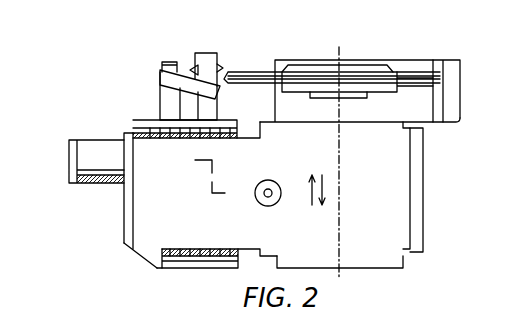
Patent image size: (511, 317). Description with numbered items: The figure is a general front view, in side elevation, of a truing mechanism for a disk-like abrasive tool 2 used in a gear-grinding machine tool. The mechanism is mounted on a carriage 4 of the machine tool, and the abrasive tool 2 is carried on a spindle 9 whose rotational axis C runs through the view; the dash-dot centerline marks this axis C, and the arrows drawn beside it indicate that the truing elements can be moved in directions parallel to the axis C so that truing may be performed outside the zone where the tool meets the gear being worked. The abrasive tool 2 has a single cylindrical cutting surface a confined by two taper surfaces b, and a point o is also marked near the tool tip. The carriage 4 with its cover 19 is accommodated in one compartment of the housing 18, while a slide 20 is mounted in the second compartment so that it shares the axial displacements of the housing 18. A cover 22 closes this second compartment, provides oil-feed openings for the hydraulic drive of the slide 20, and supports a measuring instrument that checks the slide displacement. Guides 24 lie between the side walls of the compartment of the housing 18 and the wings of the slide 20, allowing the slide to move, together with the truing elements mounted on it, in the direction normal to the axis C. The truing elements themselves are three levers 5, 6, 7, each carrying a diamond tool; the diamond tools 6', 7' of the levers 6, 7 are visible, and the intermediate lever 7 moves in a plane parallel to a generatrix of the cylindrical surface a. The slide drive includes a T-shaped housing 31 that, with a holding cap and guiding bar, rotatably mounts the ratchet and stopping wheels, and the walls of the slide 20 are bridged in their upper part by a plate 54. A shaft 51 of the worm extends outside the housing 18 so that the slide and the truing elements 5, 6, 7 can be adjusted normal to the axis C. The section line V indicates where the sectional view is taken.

The disk-like abrasive tool 2 is at (267, 70).
The carriage 4 is at (447, 60).
The lever 5 is at (190, 65).
The lever 6 is at (177, 91).
The diamond tool 6' is at (202, 54).
The intermediate lever 7 is at (216, 48).
The diamond tool 7' is at (234, 41).
The spindle 9 is at (352, 102).
The housing 18 is at (147, 197).
The cover 19 is at (424, 238).
The slide 20 is at (182, 268).
The cover 22 is at (128, 220).
The guides 24 is at (152, 128).
The T-shaped housing 31 is at (150, 250).
The shaft 51 is at (266, 196).
The plate 54 is at (132, 123).
The cylindrical cutting surface a is at (220, 87).
The taper surfaces b is at (238, 70).
The reference point o is at (237, 85).
The axis of rotation C is at (347, 175).
The section line V- V is at (38, 176).